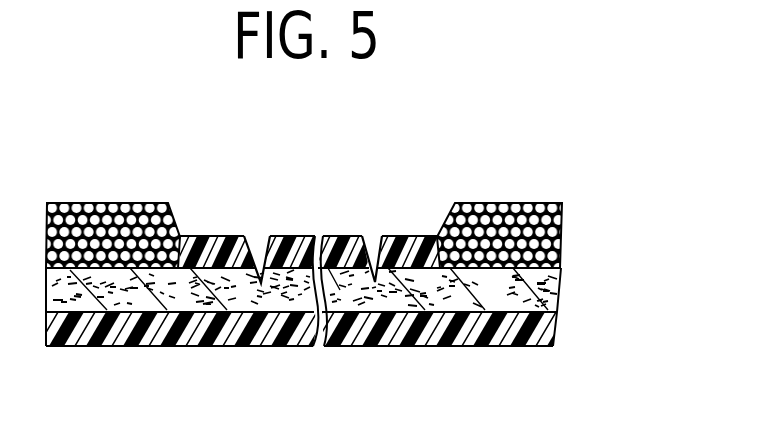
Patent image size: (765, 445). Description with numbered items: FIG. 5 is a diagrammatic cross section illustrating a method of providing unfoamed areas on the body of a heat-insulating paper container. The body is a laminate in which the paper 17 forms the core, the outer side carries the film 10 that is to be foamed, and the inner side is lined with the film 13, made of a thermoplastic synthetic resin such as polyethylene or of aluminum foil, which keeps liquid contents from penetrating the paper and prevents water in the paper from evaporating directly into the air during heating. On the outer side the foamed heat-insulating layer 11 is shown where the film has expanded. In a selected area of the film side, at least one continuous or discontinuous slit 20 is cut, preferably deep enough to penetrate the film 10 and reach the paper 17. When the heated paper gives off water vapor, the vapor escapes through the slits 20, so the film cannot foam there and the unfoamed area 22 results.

The film 10 is at (198, 238).
The foamed heat-insulating layer 11 is at (68, 203).
The film 13 is at (552, 335).
The paper 17 is at (557, 292).
The slit 20 is at (248, 242).
The unfoamed area 22 is at (305, 222).